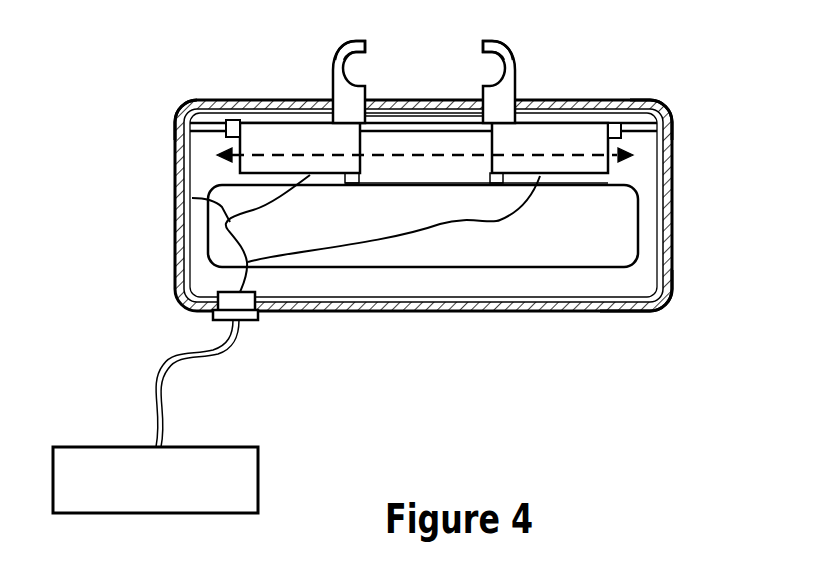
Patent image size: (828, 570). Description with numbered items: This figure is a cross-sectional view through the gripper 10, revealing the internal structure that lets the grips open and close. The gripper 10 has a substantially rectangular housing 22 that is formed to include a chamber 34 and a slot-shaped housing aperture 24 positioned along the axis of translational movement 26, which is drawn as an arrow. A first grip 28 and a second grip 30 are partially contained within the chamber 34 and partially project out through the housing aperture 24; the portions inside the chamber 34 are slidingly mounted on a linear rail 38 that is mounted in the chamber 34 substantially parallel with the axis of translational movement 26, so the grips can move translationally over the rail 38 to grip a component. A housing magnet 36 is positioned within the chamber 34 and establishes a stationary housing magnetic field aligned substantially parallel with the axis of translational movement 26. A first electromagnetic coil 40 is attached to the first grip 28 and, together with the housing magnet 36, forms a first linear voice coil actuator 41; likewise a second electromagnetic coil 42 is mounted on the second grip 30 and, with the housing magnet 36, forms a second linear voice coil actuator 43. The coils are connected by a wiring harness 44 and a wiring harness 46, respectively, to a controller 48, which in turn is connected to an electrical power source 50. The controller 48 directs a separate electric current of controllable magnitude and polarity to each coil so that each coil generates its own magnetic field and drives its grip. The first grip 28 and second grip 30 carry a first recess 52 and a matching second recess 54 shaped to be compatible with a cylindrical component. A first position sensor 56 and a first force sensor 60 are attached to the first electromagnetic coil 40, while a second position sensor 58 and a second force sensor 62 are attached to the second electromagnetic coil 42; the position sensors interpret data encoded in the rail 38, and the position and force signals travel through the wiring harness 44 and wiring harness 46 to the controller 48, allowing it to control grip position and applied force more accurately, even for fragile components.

The gripper 10 is at (383, 350).
The housing 22 is at (673, 200).
The housing aperture 24 is at (522, 104).
The axis of translational movement 26 is at (390, 152).
The first grip 28 is at (514, 58).
The second grip 30 is at (334, 66).
The chamber 34 is at (645, 288).
The housing magnet 36 is at (627, 238).
The rail 38 is at (200, 122).
The first electromagnetic coil 40 is at (565, 165).
The first linear voice coil actuator 41 is at (630, 177).
The second electromagnetic coil 42 is at (310, 170).
The second linear voice coil actuator 43 is at (220, 174).
The wiring harness 44 is at (333, 250).
The wiring harness 46 is at (198, 203).
The controller 48 is at (240, 325).
The electrical power source 50 is at (254, 468).
The first recess 52 is at (492, 44).
The second recess 54 is at (342, 45).
The first position sensor 56 is at (653, 110).
The second position sensor 58 is at (230, 118).
The first force sensor 60 is at (490, 182).
The second force sensor 62 is at (352, 180).